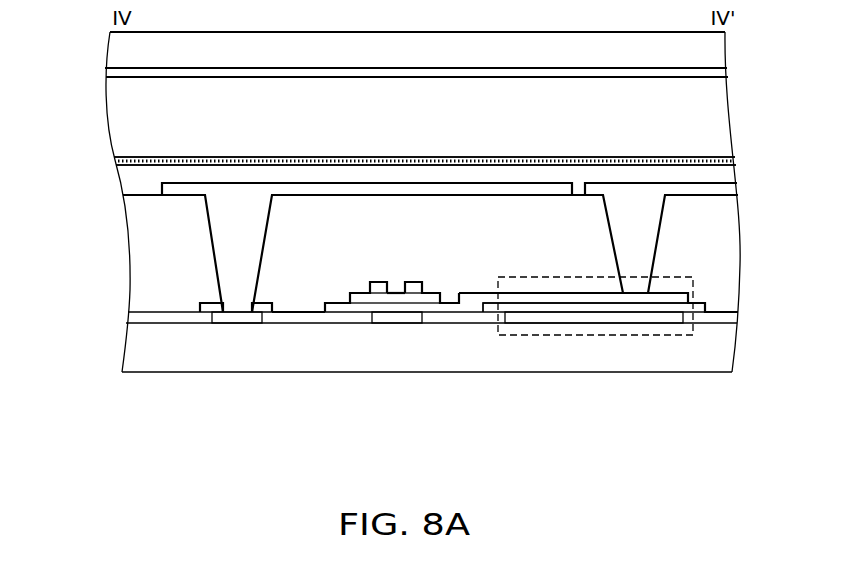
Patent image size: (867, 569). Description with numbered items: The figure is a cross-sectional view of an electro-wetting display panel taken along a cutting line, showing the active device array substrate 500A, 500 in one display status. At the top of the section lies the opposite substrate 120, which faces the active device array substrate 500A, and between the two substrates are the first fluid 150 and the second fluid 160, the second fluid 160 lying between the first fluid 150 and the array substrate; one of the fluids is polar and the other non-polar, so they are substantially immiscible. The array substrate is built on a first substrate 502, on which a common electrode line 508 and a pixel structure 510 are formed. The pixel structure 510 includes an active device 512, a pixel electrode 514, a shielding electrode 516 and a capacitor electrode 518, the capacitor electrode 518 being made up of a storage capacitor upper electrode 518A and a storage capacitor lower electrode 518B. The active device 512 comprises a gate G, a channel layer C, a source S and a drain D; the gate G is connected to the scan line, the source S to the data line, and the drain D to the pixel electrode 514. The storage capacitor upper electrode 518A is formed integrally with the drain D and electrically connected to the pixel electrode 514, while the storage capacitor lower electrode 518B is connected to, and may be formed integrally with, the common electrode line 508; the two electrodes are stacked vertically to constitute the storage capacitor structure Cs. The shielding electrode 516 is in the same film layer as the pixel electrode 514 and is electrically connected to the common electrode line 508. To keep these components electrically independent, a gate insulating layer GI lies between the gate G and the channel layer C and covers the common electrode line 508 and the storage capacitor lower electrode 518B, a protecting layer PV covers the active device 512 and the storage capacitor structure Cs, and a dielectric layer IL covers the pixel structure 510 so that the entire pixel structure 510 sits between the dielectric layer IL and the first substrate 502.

The opposite substrate 120 is at (100, 32).
The first fluid 150 is at (138, 103).
The second fluid 160 is at (122, 161).
The dielectric layer IL is at (128, 181).
The protecting layer PV is at (137, 260).
The gate insulating layer GI is at (136, 313).
The first substrate 502 is at (148, 347).
The common electrode line 508 is at (230, 320).
The shielding electrode 516 is at (303, 190).
The pixel electrode 514 is at (677, 188).
The pixel structure 510 is at (518, 380).
The active device 512 is at (392, 365).
The source S is at (343, 305).
The gate G is at (378, 323).
The channel layer C is at (398, 297).
The drain D is at (425, 300).
The capacitor electrode 518 is at (598, 369).
The storage capacitor upper electrode 518A is at (513, 300).
The storage capacitor lower electrode 518B is at (498, 407).
The storage capacitor structure Cs is at (595, 345).
The active device array substrate 500A is at (745, 170).
The active device array substrate 500 is at (746, 505).